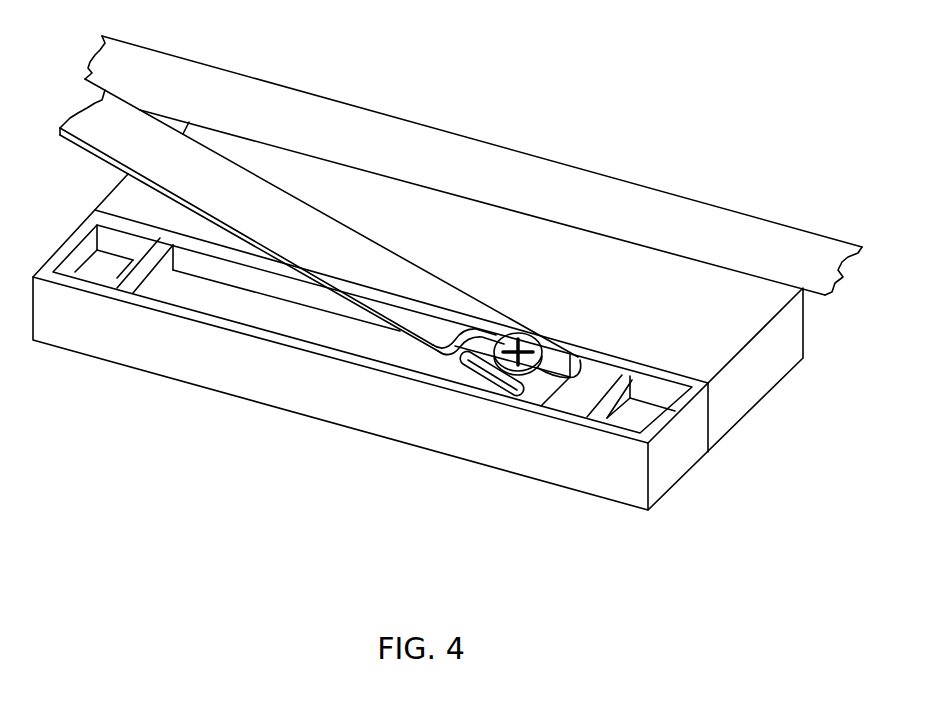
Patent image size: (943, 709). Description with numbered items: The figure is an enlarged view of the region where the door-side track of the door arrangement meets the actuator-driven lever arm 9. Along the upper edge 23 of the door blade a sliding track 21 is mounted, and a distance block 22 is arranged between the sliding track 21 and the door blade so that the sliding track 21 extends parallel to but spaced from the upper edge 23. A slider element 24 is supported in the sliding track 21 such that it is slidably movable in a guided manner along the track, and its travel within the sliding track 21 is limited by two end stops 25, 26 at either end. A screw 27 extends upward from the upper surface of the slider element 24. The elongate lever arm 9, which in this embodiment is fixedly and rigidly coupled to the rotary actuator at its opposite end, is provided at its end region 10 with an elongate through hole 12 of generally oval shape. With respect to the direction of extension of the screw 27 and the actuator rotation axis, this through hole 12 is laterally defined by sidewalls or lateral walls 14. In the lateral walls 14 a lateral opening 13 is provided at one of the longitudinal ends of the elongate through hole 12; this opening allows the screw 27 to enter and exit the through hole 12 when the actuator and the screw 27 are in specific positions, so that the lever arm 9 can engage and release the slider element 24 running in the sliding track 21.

The lever arm 9 is at (265, 200).
The end region 10 is at (418, 352).
The elongate through hole 12 is at (474, 340).
The lateral opening 13 is at (463, 362).
The lateral walls 14 is at (507, 337).
The sliding track 21 is at (673, 460).
The distance block 22 is at (740, 390).
The upper edge 23 is at (788, 240).
The slider element 24 is at (437, 358).
The end stop 25 is at (127, 282).
The end stop 26 is at (622, 372).
The screw 27 is at (543, 340).